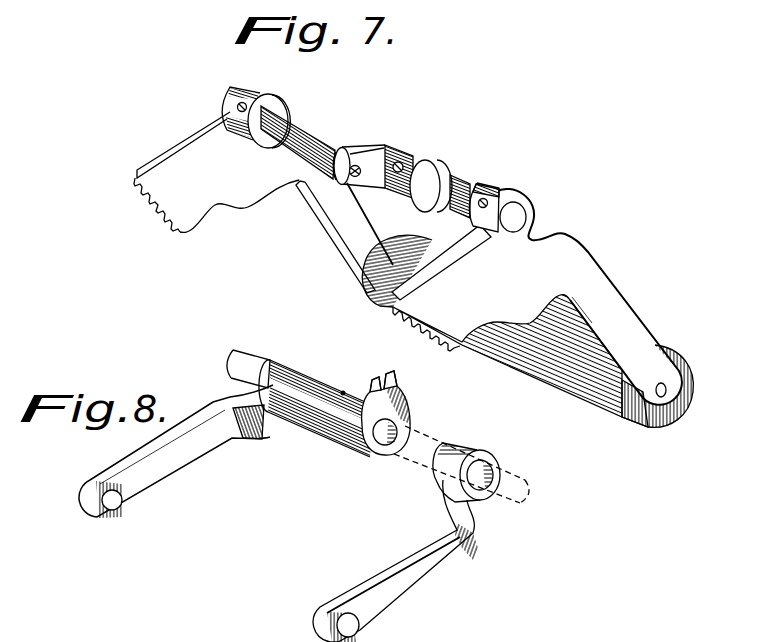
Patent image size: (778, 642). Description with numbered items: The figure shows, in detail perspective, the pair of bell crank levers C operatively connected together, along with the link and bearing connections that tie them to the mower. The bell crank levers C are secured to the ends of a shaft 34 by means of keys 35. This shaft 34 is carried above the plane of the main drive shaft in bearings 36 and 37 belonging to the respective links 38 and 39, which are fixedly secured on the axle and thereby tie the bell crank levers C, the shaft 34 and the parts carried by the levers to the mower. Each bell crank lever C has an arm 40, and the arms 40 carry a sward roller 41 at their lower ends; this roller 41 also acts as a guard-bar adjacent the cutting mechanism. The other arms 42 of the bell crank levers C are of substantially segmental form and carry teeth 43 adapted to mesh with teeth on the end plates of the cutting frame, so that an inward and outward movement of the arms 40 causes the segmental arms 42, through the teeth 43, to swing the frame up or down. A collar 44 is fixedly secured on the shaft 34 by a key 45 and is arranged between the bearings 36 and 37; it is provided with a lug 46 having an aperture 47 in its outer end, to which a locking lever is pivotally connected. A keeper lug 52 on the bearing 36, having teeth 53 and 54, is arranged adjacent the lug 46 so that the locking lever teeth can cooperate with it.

In FIG. 7, the shaft 34 is at (466, 186).
In FIG. 8, the shaft 34 is at (527, 486).
In FIG. 7, the keys 35 is at (485, 200).
In FIG. 8, the bearing 36 is at (313, 383).
In FIG. 8, the bearing 37 is at (470, 450).
In FIG. 8, the link 38 is at (177, 473).
In FIG. 8, the link 39 is at (387, 590).
In FIG. 7, the arms 40 is at (340, 227).
In FIG. 7, the sward roller 41 is at (694, 336).
In FIG. 7, the arms 42 is at (207, 194).
In FIG. 7, the teeth 43 is at (150, 204).
In FIG. 7, the collar 44 is at (460, 148).
In FIG. 7, the key 45 is at (399, 161).
In FIG. 7, the lug 46 is at (372, 158).
In FIG. 7, the aperture 47 is at (354, 164).
In FIG. 8, the keeper lug 52 is at (408, 404).
In FIG. 8, the teeth 53 is at (371, 383).
In FIG. 8, the teeth 54 is at (390, 376).
In FIG. 7, the bell crank levers C is at (222, 132).